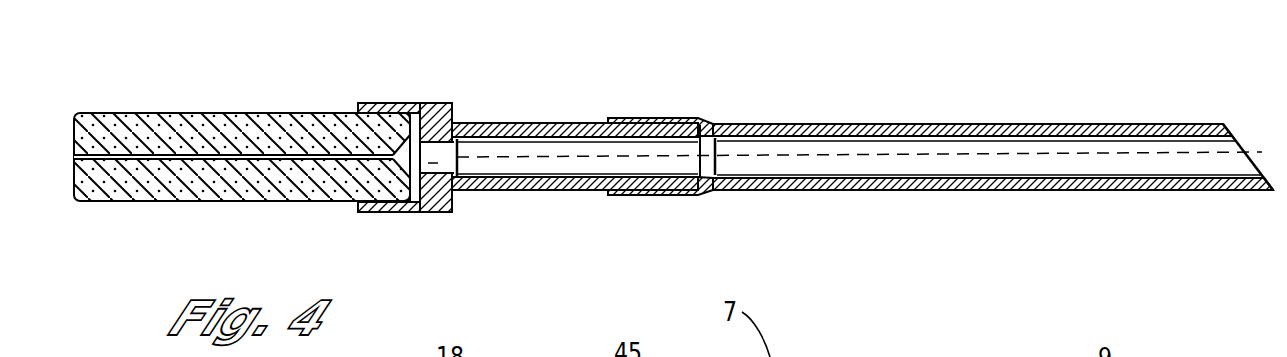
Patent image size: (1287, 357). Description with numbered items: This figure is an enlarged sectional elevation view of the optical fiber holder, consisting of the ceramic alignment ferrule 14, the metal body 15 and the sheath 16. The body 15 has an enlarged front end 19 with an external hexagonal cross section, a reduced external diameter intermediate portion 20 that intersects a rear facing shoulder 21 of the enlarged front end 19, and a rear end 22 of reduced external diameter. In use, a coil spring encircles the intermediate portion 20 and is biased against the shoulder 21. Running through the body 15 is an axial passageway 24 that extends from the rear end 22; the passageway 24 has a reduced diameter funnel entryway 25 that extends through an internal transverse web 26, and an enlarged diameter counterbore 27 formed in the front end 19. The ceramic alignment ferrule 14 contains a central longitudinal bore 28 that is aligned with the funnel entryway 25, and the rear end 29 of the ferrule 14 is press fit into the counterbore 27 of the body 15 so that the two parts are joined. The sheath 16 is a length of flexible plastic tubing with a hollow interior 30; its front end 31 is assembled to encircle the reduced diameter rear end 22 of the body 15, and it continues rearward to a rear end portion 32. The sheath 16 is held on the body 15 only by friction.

The ceramic alignment ferrule 14 is at (148, 113).
The central longitudinal bore 28 is at (234, 163).
The rear end 29 is at (390, 132).
The enlarged diameter counterbore 27 is at (385, 205).
The rear facing shoulder 21 is at (453, 104).
The enlarged front end 19 is at (373, 210).
The internal transverse web 26 is at (433, 210).
The metal body 15 is at (519, 112).
The reduced external diameter intermediate portion 20 is at (555, 190).
The funnel entryway 25 is at (455, 175).
The axial passageway 24 is at (571, 177).
The rear end 22 is at (627, 178).
The front end 31 is at (654, 118).
The hollow interior 30 is at (753, 141).
The sheath 16 is at (905, 110).
The rear end portion 32 is at (1203, 125).